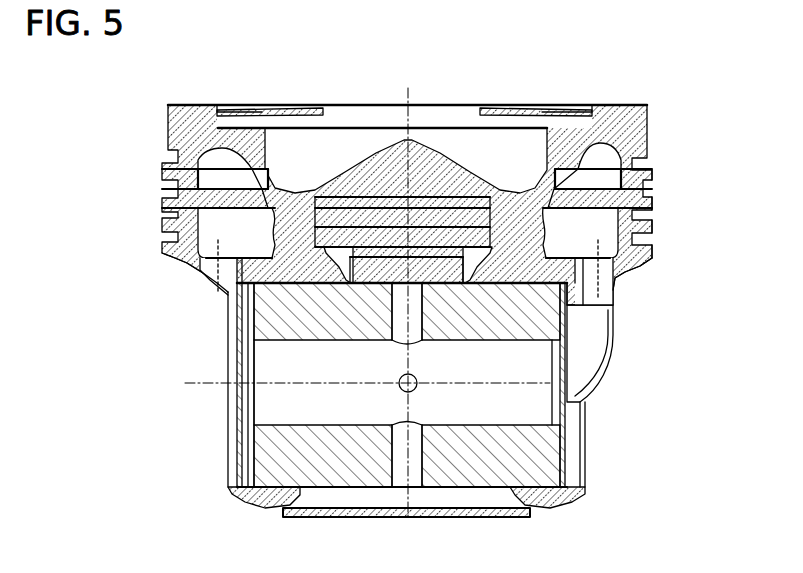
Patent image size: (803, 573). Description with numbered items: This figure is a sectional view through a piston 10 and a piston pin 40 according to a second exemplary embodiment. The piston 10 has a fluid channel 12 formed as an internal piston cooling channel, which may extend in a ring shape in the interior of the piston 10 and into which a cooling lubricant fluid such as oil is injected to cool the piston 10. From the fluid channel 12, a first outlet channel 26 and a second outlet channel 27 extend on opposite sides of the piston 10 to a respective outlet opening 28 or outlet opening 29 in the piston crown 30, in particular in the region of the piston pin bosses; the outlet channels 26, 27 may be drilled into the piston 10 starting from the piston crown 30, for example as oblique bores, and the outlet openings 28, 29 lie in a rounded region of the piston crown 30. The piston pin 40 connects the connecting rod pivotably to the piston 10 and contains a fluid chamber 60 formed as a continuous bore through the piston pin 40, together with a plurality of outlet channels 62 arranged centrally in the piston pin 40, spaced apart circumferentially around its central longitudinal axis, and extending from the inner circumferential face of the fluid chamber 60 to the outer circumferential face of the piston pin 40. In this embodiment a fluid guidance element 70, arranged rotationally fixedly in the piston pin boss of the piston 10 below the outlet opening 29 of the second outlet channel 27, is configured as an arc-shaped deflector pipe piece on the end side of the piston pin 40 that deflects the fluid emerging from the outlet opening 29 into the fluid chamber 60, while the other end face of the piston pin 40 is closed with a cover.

The piston 10 is at (168, 133).
The fluid channel 12 is at (653, 178).
The first outlet channel 26 is at (205, 268).
The second outlet channel 27 is at (632, 268).
The outlet opening 28 is at (212, 283).
The outlet opening 29 is at (603, 277).
The piston crown 30 is at (290, 285).
The piston pin 40 is at (585, 440).
The fluid chamber 60 is at (553, 458).
The outlet channels 62 is at (392, 285).
The fluid guidance element 70 is at (600, 370).